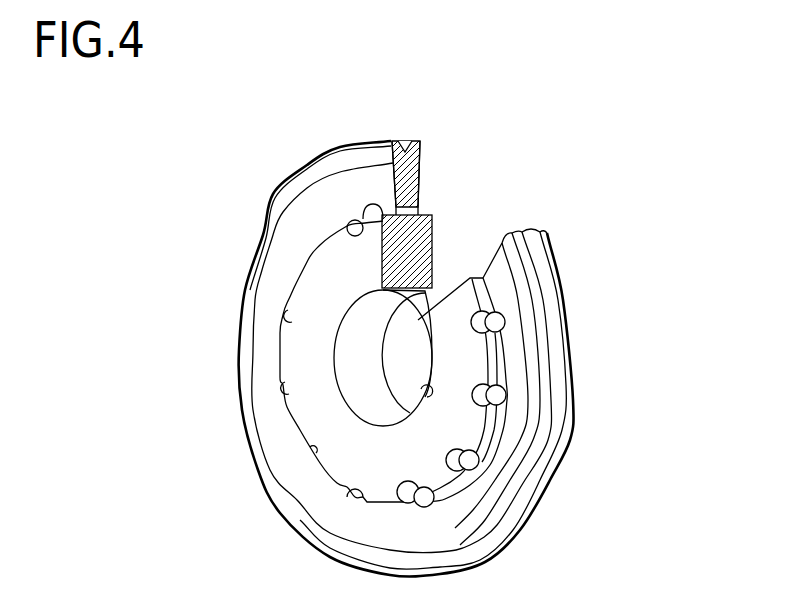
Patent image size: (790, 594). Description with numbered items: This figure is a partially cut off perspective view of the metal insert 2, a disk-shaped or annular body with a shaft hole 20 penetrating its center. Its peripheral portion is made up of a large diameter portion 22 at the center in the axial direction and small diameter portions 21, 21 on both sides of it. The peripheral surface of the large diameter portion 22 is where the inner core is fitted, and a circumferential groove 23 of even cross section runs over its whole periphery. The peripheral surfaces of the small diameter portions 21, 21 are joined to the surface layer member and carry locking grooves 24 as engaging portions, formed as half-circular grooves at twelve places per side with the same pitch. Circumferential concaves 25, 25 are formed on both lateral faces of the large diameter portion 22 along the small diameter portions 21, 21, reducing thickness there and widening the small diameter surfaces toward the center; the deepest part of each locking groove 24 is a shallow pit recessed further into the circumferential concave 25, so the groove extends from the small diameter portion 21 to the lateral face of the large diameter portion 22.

The metal insert 2 is at (592, 248).
The shaft hole 20 is at (427, 390).
The small diameter portion 21 is at (320, 245).
The large diameter portion 22 is at (422, 141).
The circumferential groove 23 is at (404, 140).
The locking groove 24 is at (493, 312).
The circumferential concave 25 is at (382, 202).